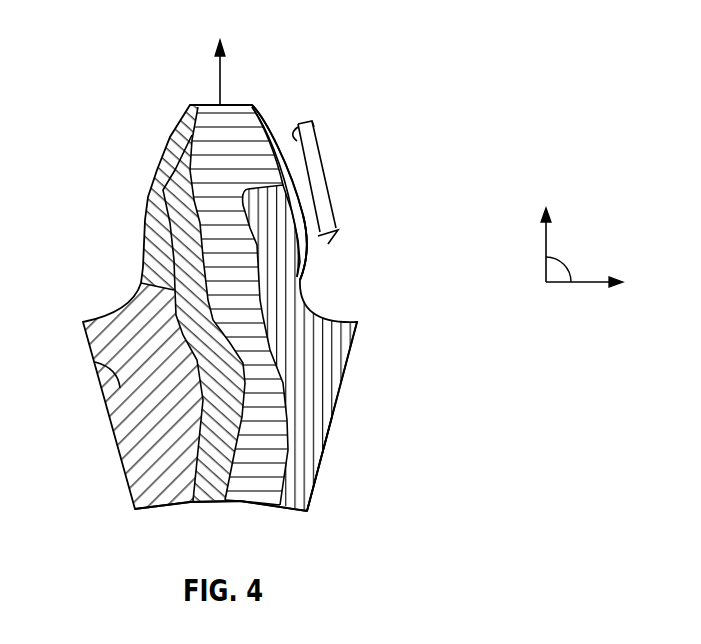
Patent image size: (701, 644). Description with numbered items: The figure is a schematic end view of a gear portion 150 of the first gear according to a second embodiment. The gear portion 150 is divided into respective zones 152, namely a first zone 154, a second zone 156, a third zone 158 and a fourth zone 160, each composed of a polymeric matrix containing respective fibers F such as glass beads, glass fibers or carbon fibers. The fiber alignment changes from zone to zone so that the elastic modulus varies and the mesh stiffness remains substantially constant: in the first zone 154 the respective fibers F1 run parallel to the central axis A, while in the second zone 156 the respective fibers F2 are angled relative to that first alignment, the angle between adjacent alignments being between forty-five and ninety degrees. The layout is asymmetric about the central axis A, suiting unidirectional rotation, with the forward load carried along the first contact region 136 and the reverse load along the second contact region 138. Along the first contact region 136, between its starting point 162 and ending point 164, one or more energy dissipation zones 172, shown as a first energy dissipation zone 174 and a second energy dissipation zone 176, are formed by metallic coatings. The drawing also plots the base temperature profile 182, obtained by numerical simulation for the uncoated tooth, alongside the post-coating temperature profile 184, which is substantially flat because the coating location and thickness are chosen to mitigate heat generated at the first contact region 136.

The gear portion 150 is at (114, 133).
The second contact region 138 is at (170, 115).
The ending point 164 is at (264, 106).
The energy dissipation zones 172 is at (268, 122).
The post-coating temperature profile 184 is at (301, 140).
The base temperature profile 182 is at (343, 210).
The first contact region 136 is at (316, 254).
The starting point 162 is at (303, 280).
The respective zones 152 is at (362, 351).
The first zone 154 is at (304, 460).
The second zone 156 is at (248, 490).
The third zone 158 is at (206, 482).
The fourth zone 160 is at (121, 419).
The first energy dissipation zone 174 is at (280, 133).
The second energy dissipation zone 176 is at (340, 231).
The central axis A is at (223, 60).
The respective fibers F is at (102, 372).
The respective fibers of first alignment F1 is at (312, 408).
The respective fibers of second alignment F2 is at (273, 347).